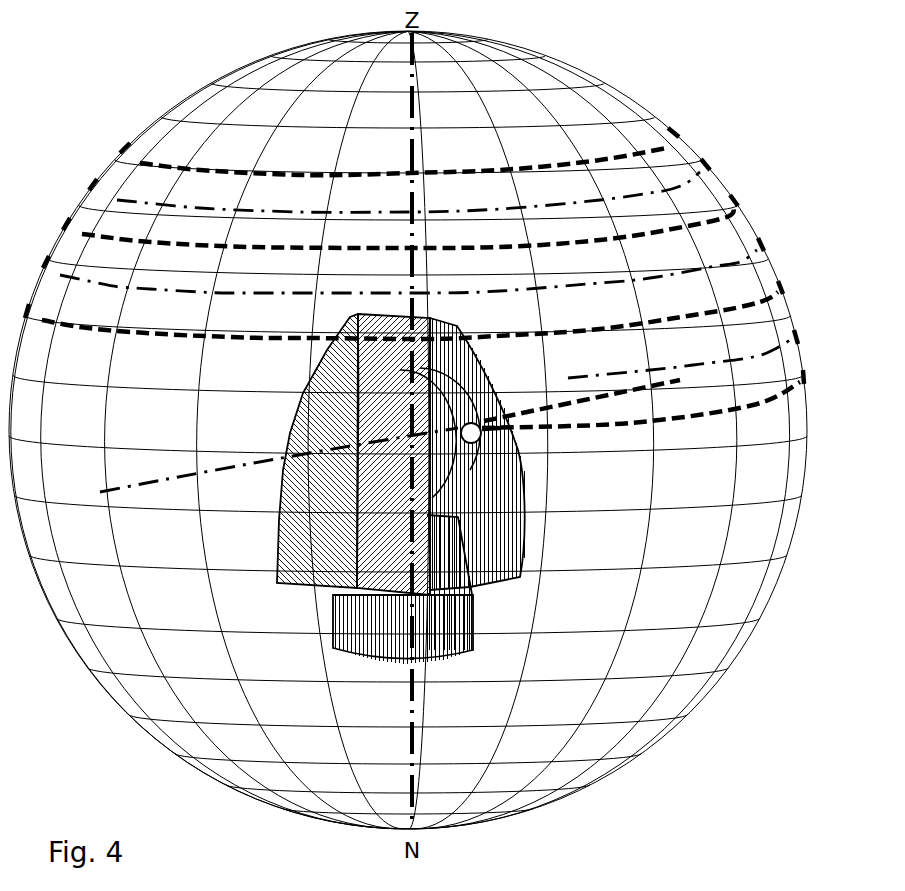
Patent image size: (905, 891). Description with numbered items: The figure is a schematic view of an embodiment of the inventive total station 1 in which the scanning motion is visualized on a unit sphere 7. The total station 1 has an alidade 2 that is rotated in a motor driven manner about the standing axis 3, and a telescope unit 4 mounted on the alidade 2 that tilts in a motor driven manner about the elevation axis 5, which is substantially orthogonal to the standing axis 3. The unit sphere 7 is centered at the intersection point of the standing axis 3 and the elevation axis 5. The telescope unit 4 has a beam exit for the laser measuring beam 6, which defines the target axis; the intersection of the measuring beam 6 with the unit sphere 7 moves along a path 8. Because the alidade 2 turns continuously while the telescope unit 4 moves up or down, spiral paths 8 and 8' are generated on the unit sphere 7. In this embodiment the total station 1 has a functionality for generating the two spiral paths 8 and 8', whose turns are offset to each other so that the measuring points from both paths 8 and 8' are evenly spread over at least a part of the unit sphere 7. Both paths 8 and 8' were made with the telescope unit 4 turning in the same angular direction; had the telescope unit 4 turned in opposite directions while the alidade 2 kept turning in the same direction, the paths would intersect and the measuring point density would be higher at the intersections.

The total station 1 is at (282, 436).
The alidade 2 is at (278, 517).
The standing axis 3 is at (403, 170).
The telescope unit 4 is at (402, 360).
The elevation axis 5 is at (224, 461).
The laser measuring beam 6 is at (527, 424).
The unit sphere 7 is at (773, 590).
The path 8 is at (643, 434).
The second spiral path 8' is at (683, 408).